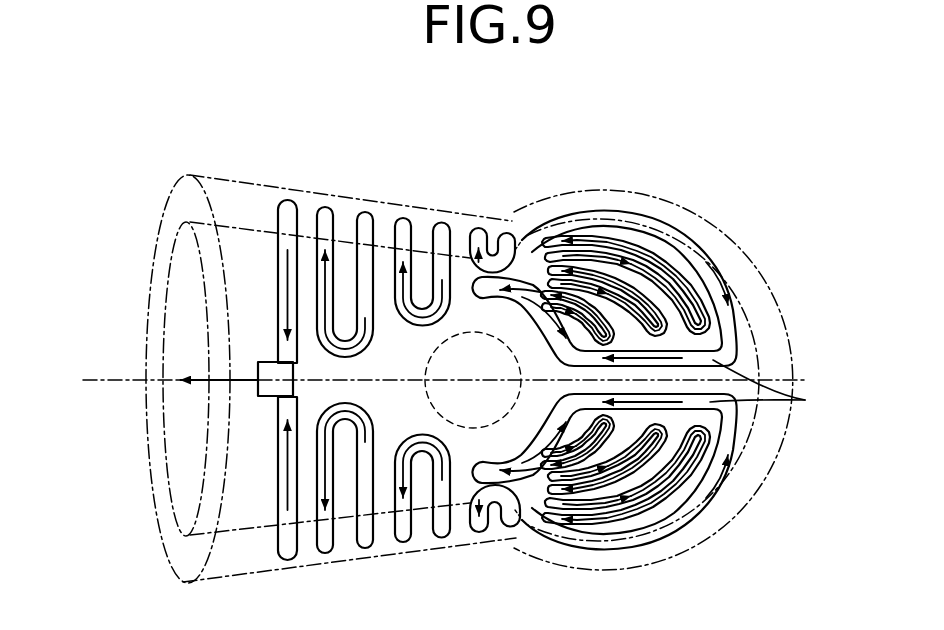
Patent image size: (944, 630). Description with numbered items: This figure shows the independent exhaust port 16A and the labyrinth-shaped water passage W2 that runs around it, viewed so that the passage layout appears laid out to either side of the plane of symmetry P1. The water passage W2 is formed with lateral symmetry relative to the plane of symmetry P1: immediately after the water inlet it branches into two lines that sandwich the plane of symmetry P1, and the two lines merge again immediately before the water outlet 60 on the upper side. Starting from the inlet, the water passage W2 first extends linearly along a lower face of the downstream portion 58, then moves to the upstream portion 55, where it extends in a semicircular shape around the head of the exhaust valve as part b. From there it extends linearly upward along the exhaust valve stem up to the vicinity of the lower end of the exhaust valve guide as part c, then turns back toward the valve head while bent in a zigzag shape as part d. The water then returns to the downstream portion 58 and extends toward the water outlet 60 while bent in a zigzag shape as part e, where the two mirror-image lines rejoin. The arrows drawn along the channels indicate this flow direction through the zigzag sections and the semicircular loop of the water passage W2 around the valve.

The independent exhaust port 16A is at (484, 176).
The downstream portion 58 is at (338, 197).
The water outlet 60 is at (256, 400).
The part e is at (373, 340).
The upstream portion 55 is at (715, 246).
The part b is at (627, 224).
The water passage W2 is at (735, 306).
The part d is at (628, 322).
The part c is at (768, 387).
The plane of symmetry P1 is at (101, 378).